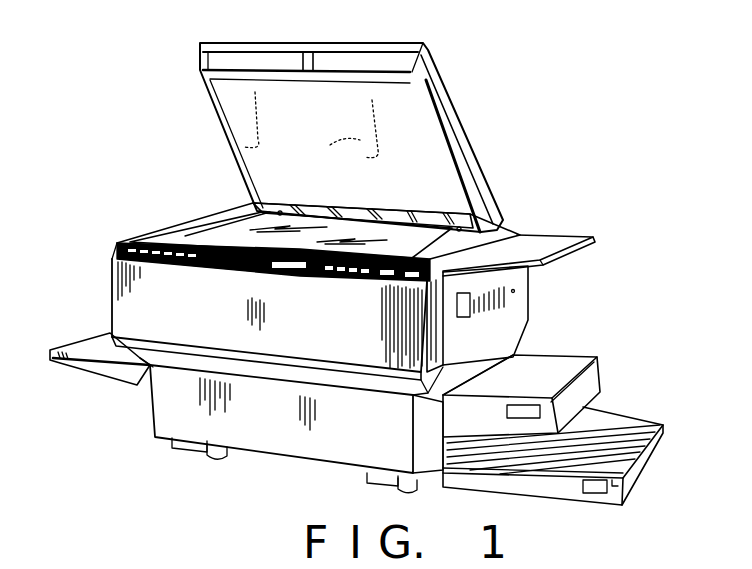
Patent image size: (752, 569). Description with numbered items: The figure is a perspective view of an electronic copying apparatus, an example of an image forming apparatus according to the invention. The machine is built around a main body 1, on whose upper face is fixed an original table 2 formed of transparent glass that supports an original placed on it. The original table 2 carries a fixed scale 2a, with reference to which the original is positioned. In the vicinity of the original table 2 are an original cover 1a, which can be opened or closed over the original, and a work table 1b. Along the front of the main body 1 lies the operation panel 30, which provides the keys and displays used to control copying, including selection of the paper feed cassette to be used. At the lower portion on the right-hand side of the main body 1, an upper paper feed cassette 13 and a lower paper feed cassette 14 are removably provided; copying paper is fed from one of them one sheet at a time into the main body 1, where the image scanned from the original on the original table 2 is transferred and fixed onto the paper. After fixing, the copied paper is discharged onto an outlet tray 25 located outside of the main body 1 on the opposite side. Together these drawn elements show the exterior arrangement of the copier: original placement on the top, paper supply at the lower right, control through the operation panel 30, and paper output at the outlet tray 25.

The main body 1 is at (272, 428).
The original cover 1a is at (470, 134).
The work table 1b is at (588, 230).
The original table 2 is at (220, 222).
The fixed scale 2a is at (238, 210).
The upper paper feed cassette 13 is at (600, 371).
The lower paper feed cassette 14 is at (647, 468).
The outlet tray 25 is at (113, 390).
The operation panel 30 is at (236, 270).